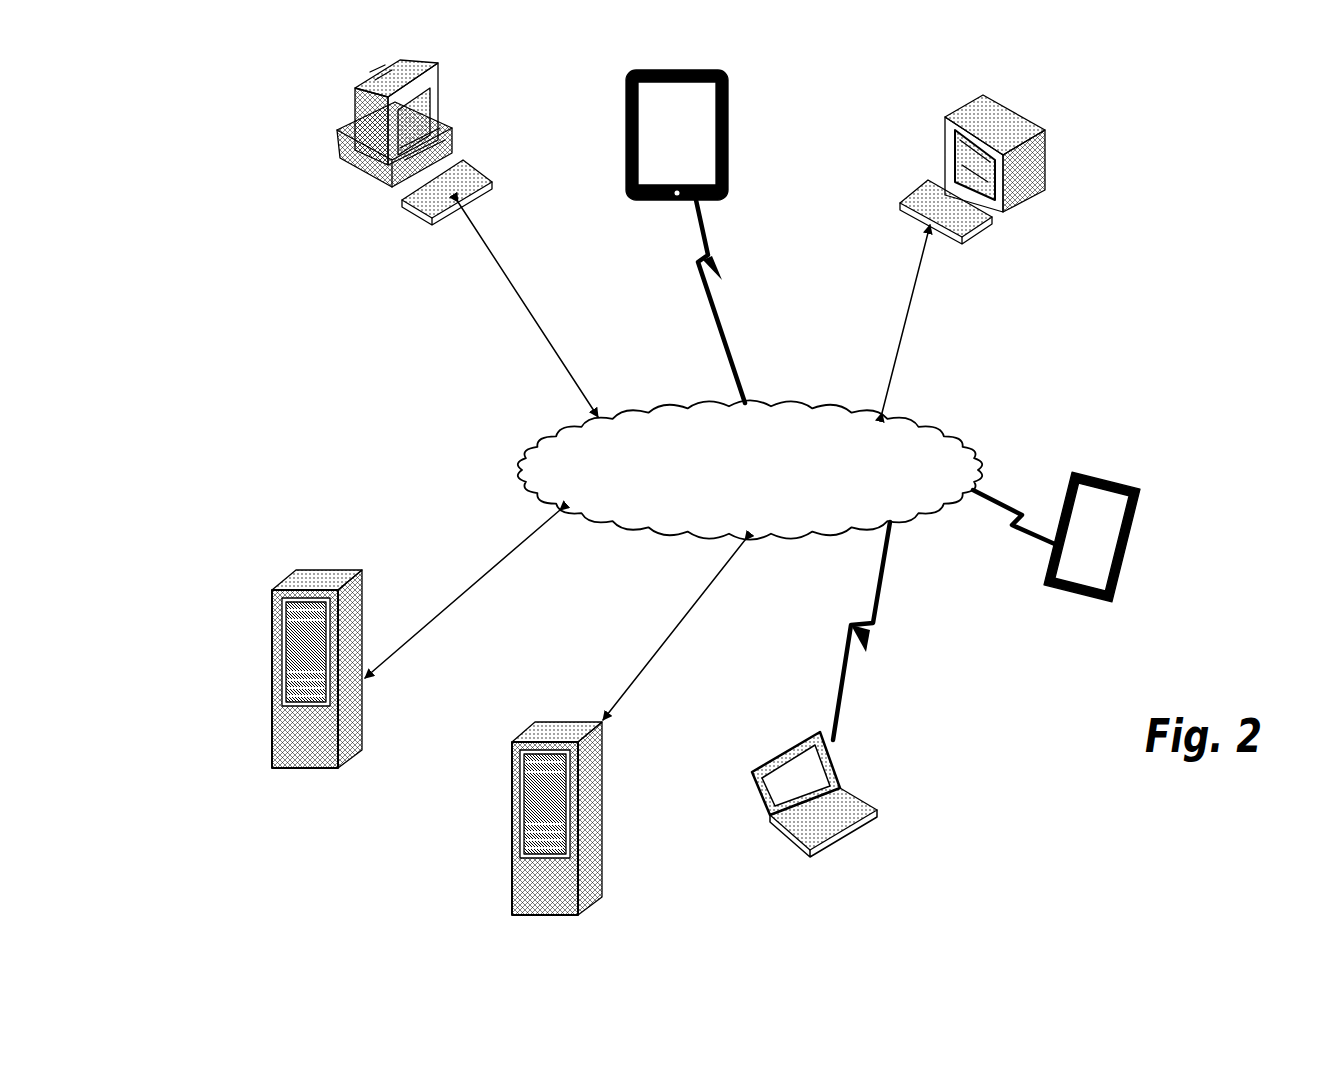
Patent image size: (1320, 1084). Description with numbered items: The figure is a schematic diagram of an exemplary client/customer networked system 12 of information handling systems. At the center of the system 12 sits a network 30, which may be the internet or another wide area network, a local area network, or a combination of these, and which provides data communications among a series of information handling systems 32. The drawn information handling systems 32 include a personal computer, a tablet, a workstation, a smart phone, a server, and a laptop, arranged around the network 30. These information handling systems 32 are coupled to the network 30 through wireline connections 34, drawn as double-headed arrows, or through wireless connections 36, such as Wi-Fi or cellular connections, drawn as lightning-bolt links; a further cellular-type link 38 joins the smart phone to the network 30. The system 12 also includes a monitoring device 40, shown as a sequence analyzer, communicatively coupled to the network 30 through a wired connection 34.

The client/customer networked system 12 is at (226, 445).
The network 30 is at (803, 402).
The information handling systems 32 is at (444, 70).
The wireline connections 34 is at (518, 288).
The wireless connections 36 is at (728, 328).
The cellular connection 38 is at (1013, 500).
The monitoring devices 40 is at (606, 868).